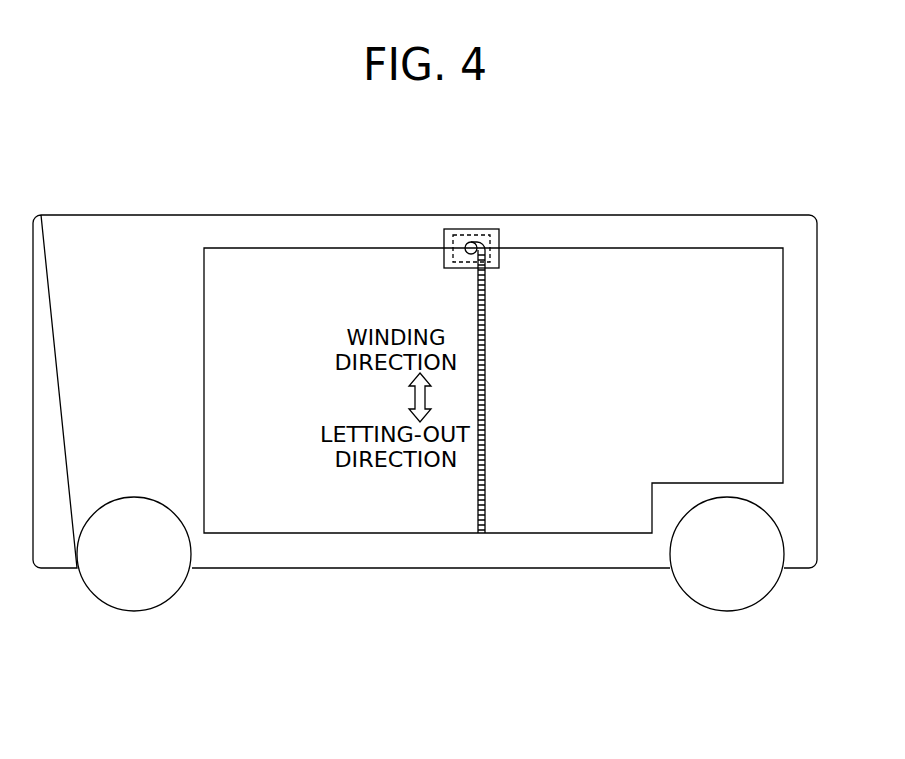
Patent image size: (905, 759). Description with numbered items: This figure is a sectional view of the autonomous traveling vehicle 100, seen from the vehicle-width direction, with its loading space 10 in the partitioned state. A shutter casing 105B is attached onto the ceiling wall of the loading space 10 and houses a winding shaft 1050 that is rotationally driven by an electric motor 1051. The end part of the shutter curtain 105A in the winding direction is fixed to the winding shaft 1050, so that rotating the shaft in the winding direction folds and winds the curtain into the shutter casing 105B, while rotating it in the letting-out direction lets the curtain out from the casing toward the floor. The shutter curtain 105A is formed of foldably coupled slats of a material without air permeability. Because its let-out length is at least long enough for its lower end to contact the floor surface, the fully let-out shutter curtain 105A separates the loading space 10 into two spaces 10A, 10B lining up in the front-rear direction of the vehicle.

The autonomous traveling vehicle 100 is at (649, 201).
The loading space 10 is at (493, 477).
The space 10A is at (350, 517).
The space 10B is at (525, 517).
The shutter curtain 105A is at (486, 371).
The shutter casing 105B is at (499, 254).
The winding shaft 1050 is at (467, 254).
The electric motor 1051 is at (460, 238).